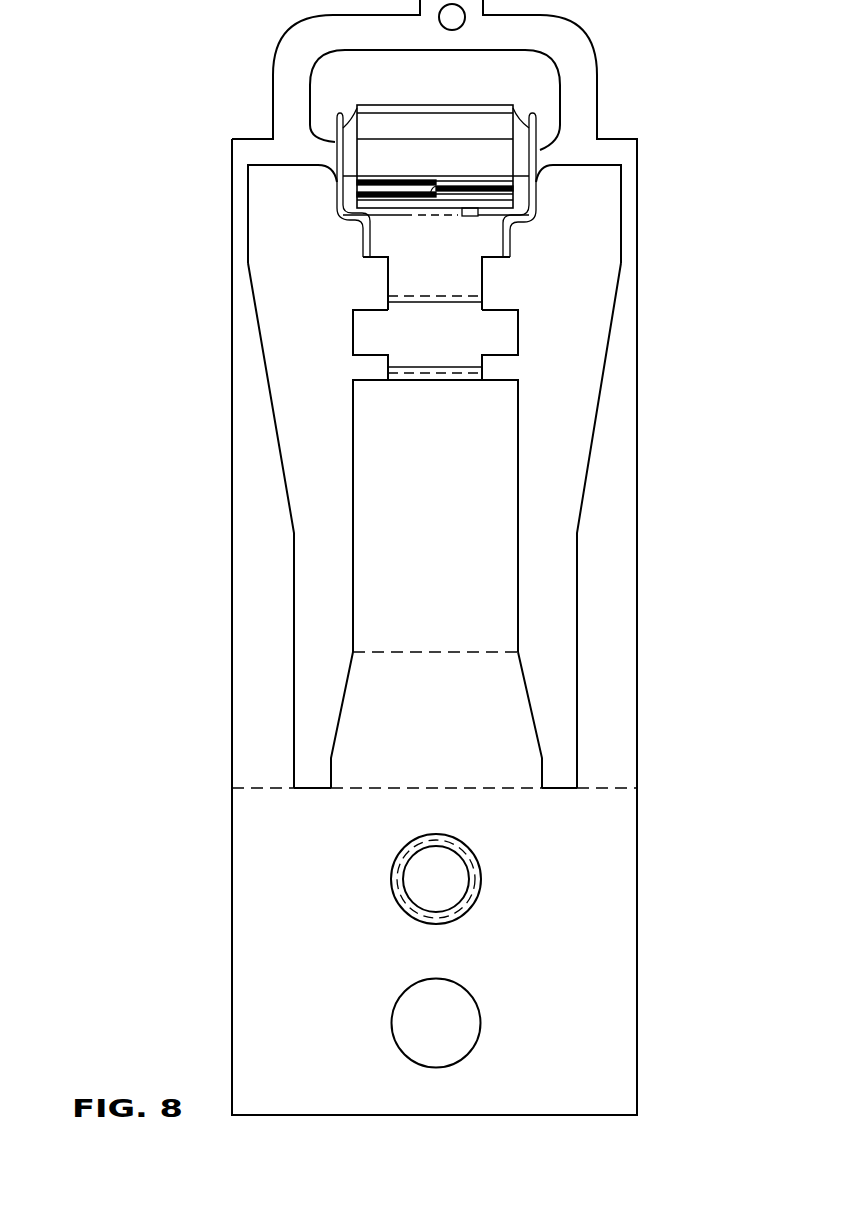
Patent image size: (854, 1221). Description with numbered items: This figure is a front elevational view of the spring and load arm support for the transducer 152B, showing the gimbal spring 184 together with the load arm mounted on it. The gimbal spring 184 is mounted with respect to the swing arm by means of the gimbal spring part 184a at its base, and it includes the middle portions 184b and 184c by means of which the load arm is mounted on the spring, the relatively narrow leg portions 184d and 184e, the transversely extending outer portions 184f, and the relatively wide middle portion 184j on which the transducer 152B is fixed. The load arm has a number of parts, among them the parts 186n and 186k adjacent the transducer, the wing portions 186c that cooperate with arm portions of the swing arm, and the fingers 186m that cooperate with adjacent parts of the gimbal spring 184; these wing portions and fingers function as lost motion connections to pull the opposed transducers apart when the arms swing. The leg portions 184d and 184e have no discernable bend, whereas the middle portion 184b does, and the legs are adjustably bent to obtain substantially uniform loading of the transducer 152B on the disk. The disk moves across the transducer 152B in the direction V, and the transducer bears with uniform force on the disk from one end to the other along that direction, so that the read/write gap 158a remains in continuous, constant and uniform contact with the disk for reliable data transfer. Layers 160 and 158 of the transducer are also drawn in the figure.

The gimbal spring 184 is at (646, 720).
The gimbal spring part 184a is at (335, 974).
The middle portion 184b is at (460, 737).
The middle portion 184c is at (462, 447).
The leg portion 184d is at (640, 430).
The leg portion 184e is at (231, 437).
The transversely extending outer portion 184f is at (546, 150).
The wide middle portion 184j is at (494, 108).
The fingers 186m is at (332, 163).
The load arm part 186n is at (384, 252).
The load arm part 186k is at (511, 247).
The wing portions 186c is at (520, 327).
The transducer 152B is at (451, 148).
The electrode layer 160 is at (393, 178).
The sensing layer 158 is at (366, 190).
The read/write gap 158a is at (432, 197).
The direction of disk movement V is at (556, 152).